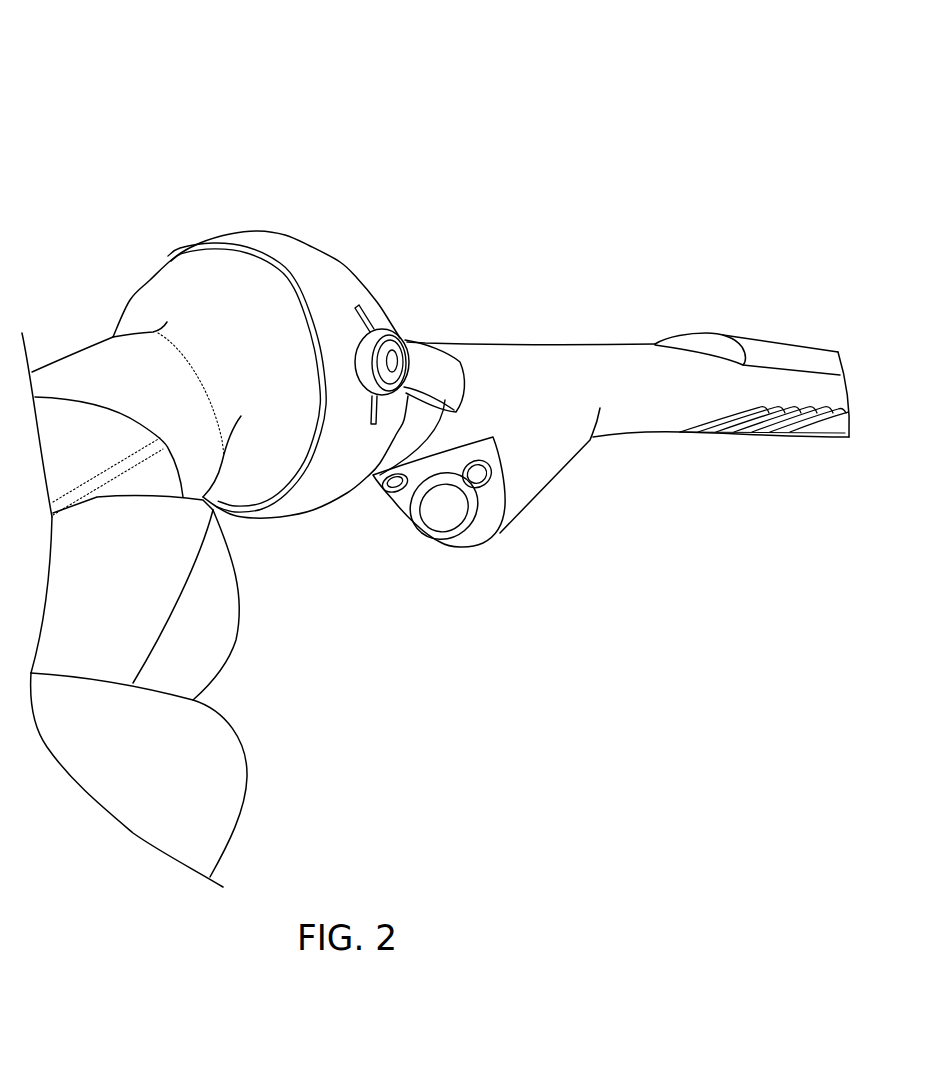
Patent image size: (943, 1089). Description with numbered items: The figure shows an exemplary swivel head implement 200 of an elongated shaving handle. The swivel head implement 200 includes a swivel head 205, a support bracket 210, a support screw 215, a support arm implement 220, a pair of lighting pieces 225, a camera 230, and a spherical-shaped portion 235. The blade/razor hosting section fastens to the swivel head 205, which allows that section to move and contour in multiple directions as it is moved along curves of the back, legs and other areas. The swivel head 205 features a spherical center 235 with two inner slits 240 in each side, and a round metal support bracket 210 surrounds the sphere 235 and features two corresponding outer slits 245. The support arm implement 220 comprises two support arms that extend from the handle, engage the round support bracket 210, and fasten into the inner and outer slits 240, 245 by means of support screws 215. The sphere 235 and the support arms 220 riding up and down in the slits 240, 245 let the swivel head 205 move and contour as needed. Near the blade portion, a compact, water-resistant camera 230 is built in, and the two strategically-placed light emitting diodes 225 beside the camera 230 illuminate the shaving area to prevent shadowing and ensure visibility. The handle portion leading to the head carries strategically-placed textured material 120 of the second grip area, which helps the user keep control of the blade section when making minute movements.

The swivel head implement 200 is at (190, 118).
The swivel head 205 is at (173, 300).
The support bracket 210 is at (300, 257).
The support screw 215 is at (455, 372).
The support arm implement 220 is at (472, 343).
The textured material 120 is at (767, 347).
The lighting pieces 225 is at (383, 489).
The camera 230 is at (450, 550).
The spherical-shaped portion 235 is at (270, 452).
The inner slits 240 is at (366, 311).
The outer slits 245 is at (403, 338).